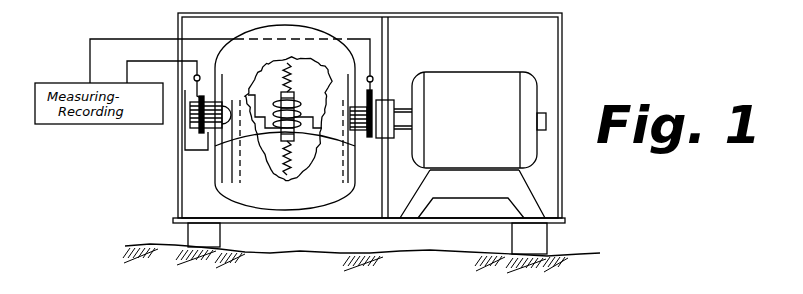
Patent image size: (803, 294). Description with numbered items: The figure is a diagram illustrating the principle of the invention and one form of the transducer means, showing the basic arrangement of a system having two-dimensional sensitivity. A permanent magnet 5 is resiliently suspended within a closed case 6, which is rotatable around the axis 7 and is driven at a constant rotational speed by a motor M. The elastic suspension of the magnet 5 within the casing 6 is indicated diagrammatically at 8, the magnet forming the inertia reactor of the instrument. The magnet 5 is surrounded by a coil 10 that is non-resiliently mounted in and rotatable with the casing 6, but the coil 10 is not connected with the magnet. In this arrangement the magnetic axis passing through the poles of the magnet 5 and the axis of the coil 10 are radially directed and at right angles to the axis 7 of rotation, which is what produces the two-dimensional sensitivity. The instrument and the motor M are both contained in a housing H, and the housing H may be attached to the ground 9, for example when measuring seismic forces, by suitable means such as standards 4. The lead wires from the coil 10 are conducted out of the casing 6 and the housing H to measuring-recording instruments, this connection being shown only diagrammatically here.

The housing H is at (563, 55).
The standards 4 is at (367, 238).
The permanent magnet 5 is at (294, 96).
The closed case 6 is at (246, 66).
The axis 7 is at (195, 140).
The elastic suspension 8 is at (291, 79).
The ground 9 is at (425, 263).
The coil 10 is at (277, 112).
The motor M is at (473, 145).